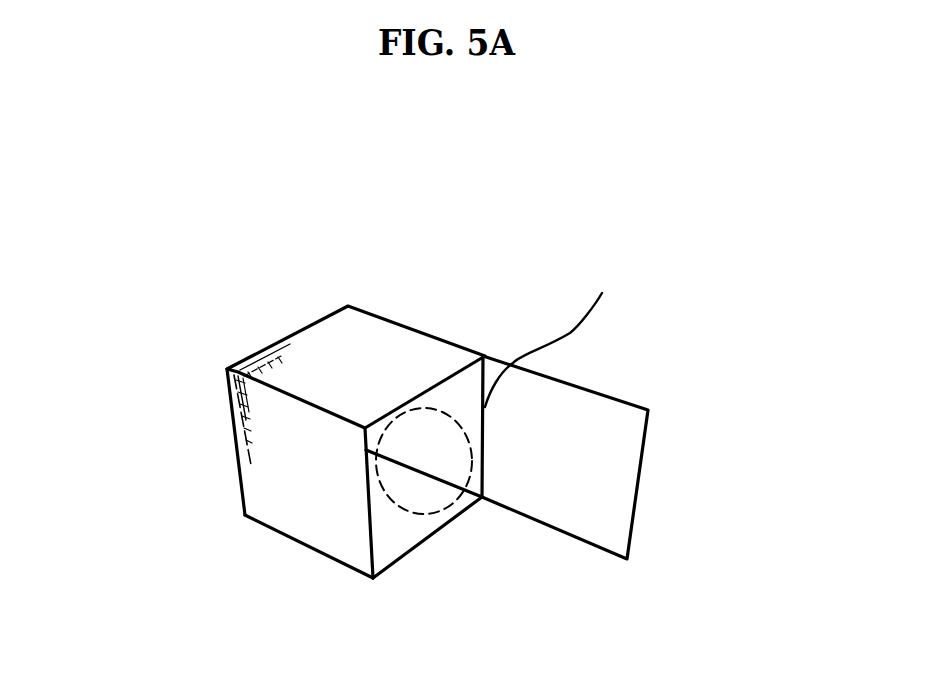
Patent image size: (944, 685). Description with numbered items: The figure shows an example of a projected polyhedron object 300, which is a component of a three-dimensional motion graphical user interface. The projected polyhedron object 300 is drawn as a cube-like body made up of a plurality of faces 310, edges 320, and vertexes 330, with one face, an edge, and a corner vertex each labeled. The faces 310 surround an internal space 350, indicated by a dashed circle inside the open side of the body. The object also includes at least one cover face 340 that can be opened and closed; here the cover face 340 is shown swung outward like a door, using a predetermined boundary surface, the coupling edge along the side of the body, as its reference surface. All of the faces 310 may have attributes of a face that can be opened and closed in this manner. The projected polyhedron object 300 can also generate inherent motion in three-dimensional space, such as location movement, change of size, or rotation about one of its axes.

The projected polyhedron object 300 is at (176, 200).
The face 310 is at (365, 345).
The edge 320 is at (272, 360).
The vertex 330 is at (243, 515).
The cover face 340 is at (585, 418).
The internal space 350 is at (460, 507).